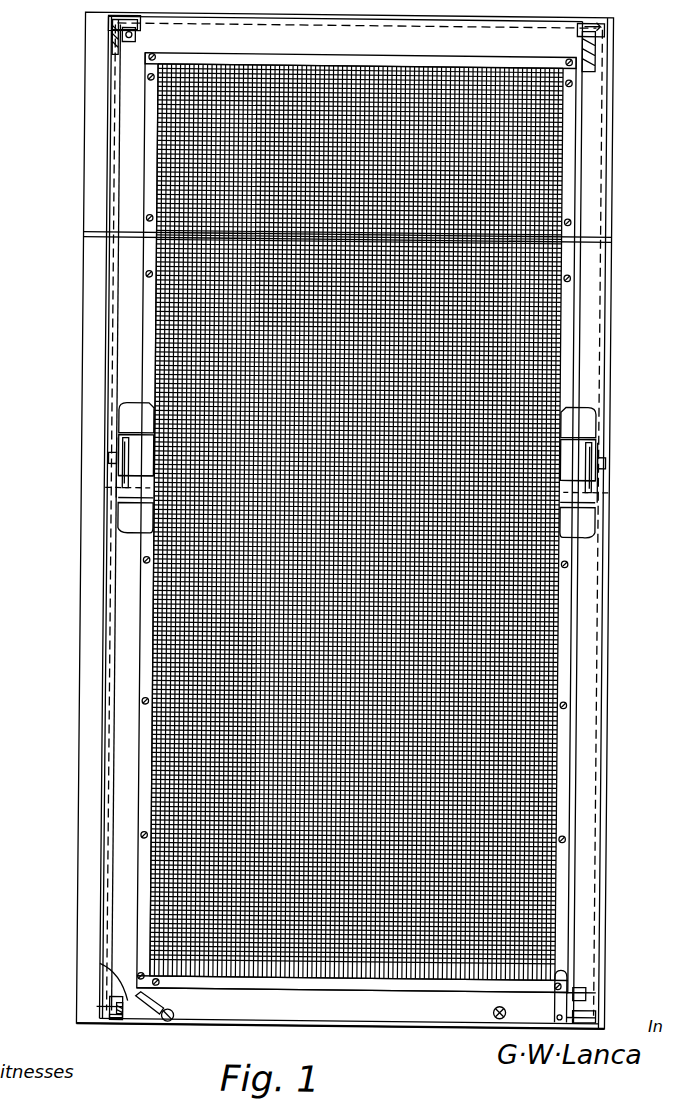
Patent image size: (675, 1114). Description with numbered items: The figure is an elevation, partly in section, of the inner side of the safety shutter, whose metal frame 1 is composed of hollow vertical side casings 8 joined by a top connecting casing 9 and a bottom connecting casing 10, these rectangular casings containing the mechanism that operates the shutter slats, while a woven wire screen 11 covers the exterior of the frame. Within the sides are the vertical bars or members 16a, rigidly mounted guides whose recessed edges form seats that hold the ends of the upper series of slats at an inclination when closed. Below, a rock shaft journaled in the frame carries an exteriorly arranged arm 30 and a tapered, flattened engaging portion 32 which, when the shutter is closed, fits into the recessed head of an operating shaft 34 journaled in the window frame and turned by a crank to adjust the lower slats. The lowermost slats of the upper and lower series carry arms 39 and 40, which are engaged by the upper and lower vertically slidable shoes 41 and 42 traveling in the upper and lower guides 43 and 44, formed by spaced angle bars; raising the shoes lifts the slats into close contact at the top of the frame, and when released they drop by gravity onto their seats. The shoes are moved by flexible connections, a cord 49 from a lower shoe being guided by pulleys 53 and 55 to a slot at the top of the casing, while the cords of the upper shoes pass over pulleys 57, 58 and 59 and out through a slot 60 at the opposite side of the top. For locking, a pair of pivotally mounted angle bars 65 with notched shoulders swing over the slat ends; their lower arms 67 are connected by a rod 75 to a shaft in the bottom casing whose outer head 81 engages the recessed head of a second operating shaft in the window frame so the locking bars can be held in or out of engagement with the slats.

The frame 1 is at (618, 348).
The vertical side casings 8 is at (593, 270).
The top connecting casing 9 is at (352, 34).
The bottom connecting casing 10 is at (381, 1022).
The wire screen mesh 11 is at (530, 170).
The vertical bars or members 16a is at (128, 418).
The arm 30 is at (148, 1012).
The engaging portion 32 is at (170, 1024).
The operating shaft 34 is at (576, 56).
The arm 39 is at (120, 448).
The arm 40 is at (586, 992).
The upper vertically slidable shoe 41 is at (118, 482).
The lower vertically slidable shoe 42 is at (100, 996).
The upper guide 43 is at (108, 434).
The lower guide 44 is at (112, 514).
The cord 49 is at (110, 462).
The pulley 53 is at (112, 38).
The pulley 55 is at (138, 36).
The pulley 57 is at (118, 55).
The pulley 58 is at (607, 52).
The pulley 59 is at (578, 32).
The slot 60 is at (596, 48).
The pivotally mounted angle bars 65 is at (108, 1012).
The lower arms 67 is at (116, 1024).
The rod 75 is at (560, 1018).
The engaging portion or head 81 is at (501, 1018).